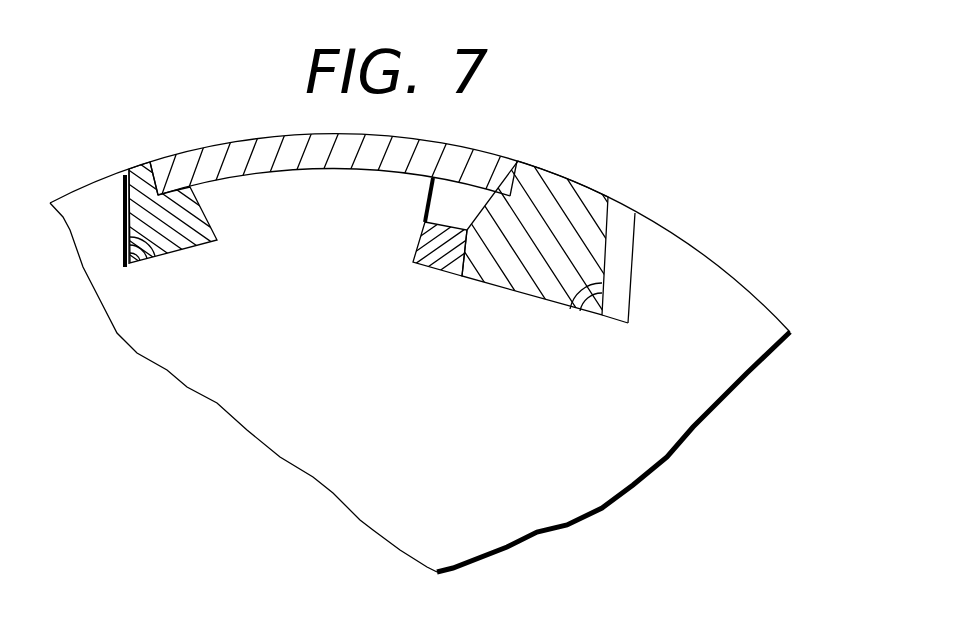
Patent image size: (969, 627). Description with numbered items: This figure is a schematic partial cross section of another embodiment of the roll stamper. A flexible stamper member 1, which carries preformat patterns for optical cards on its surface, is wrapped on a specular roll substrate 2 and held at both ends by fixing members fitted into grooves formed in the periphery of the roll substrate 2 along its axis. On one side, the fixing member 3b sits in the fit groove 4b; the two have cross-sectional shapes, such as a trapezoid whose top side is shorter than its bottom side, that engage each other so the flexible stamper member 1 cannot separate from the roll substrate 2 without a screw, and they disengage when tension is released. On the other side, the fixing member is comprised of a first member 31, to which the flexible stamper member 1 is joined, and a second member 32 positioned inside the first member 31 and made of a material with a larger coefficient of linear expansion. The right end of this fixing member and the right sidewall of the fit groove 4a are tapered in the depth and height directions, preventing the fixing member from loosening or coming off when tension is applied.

The flexible stamper member 1 is at (349, 172).
The roll substrate 2 is at (718, 295).
The fixing member 3b is at (200, 233).
The fit groove 4b is at (124, 240).
The first member 31 is at (497, 272).
The second member 32 is at (437, 255).
The fit groove 4a is at (633, 287).